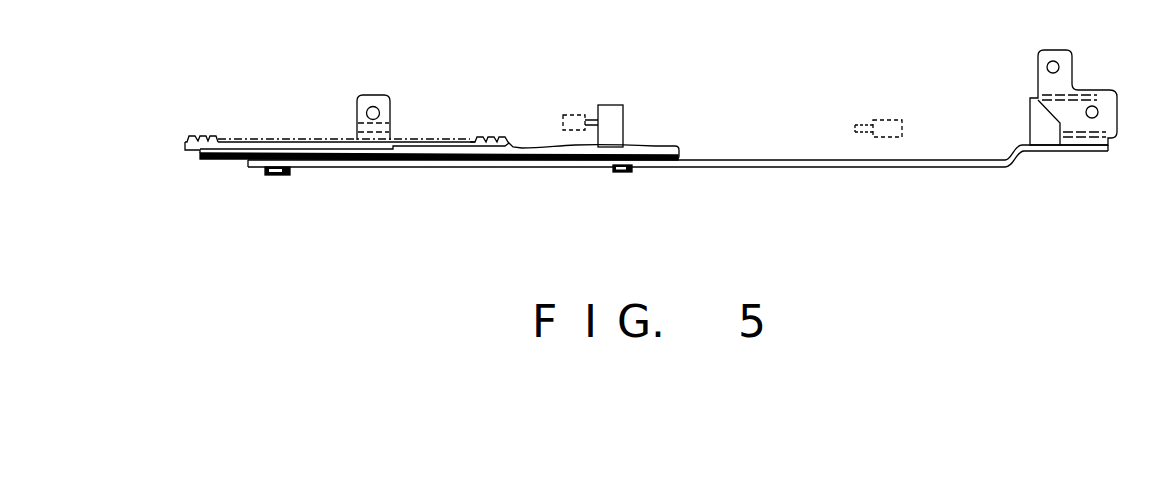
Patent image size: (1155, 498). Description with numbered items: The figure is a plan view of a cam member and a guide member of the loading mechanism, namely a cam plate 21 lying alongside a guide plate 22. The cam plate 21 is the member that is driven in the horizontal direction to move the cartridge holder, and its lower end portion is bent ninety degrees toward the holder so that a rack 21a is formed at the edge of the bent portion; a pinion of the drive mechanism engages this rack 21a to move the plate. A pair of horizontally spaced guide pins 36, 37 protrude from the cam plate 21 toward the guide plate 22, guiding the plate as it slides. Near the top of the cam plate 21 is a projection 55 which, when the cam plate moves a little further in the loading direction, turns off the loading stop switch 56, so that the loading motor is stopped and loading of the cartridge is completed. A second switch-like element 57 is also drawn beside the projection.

The cam plate 21 is at (432, 150).
The rack 21a is at (195, 140).
The guide plate 22 is at (866, 168).
The guide pin 36 is at (286, 174).
The guide pin 37 is at (629, 173).
The projection 55 is at (623, 127).
The loading stop switch 56 is at (940, 115).
The pin 57 is at (574, 113).